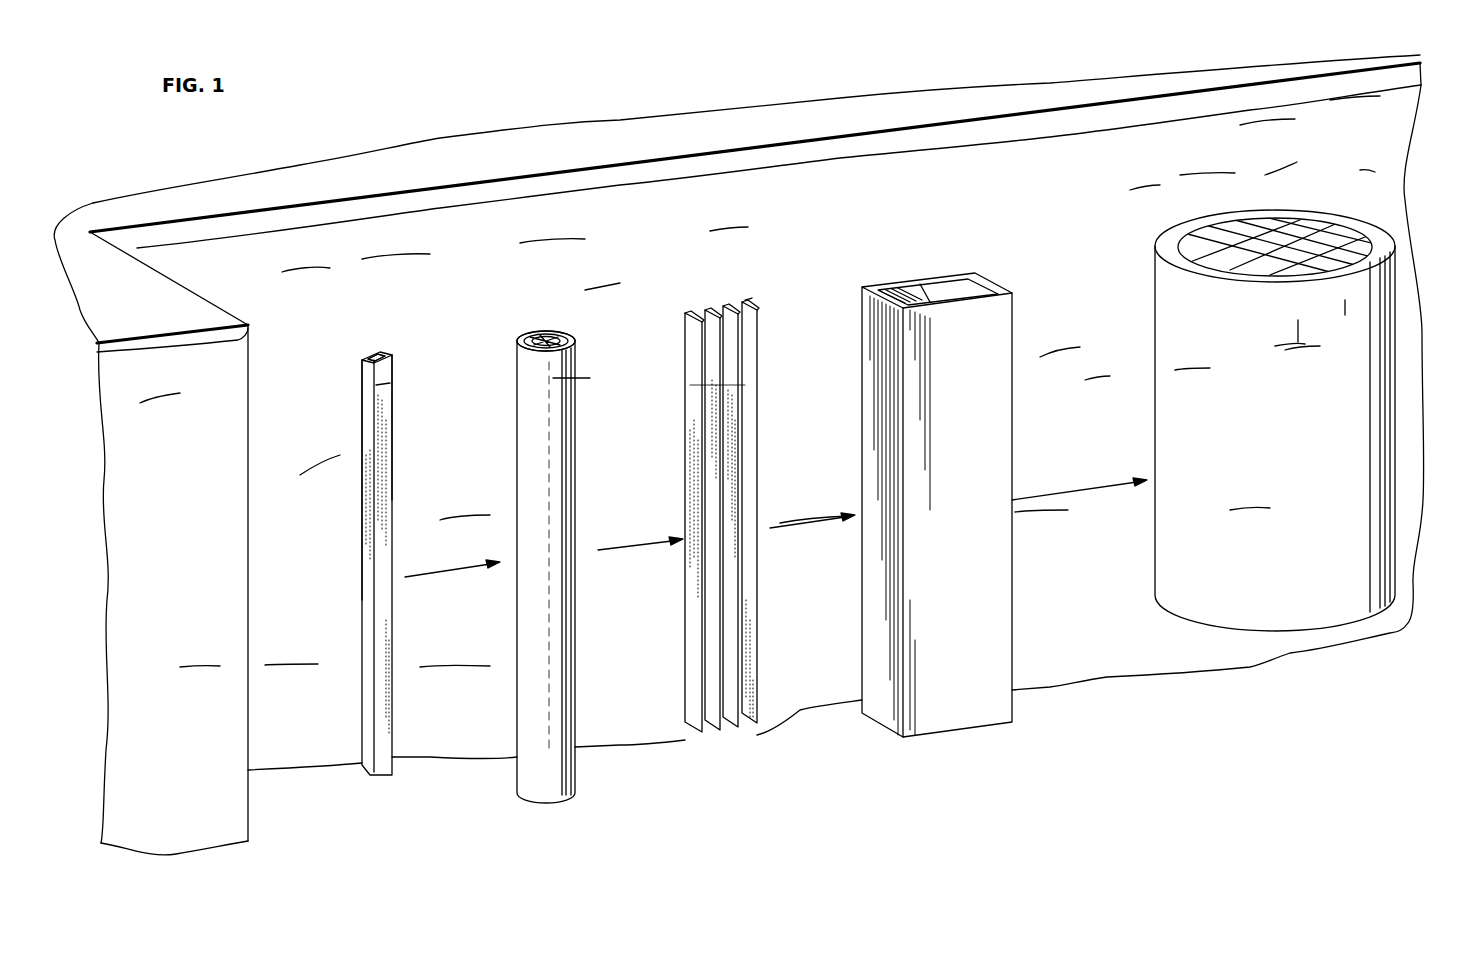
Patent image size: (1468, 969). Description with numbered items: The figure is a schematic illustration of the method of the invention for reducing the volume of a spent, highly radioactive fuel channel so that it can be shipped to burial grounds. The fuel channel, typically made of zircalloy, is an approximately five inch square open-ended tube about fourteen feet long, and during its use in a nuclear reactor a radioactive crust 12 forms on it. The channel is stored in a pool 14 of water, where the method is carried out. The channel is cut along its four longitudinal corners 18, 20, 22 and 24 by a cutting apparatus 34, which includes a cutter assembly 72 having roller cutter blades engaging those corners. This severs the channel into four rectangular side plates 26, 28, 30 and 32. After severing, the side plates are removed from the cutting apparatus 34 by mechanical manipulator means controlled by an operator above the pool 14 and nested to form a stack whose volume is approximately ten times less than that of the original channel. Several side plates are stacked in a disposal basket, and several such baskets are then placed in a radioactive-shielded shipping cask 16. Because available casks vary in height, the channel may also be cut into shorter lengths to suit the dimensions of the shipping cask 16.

The radioactive crust 12 is at (388, 450).
The pool 14 is at (540, 222).
The shipping cask 16 is at (1195, 417).
The longitudinal corner 18 is at (362, 414).
The longitudinal corner 20 is at (384, 386).
The longitudinal corner 22 is at (392, 370).
The longitudinal corner 24 is at (376, 352).
The rectangular side plate 26 is at (690, 340).
The rectangular side plate 28 is at (708, 318).
The rectangular side plate 30 is at (730, 313).
The rectangular side plate 32 is at (752, 346).
The cutting apparatus 34 is at (565, 435).
The cutter assembly 72 is at (555, 333).